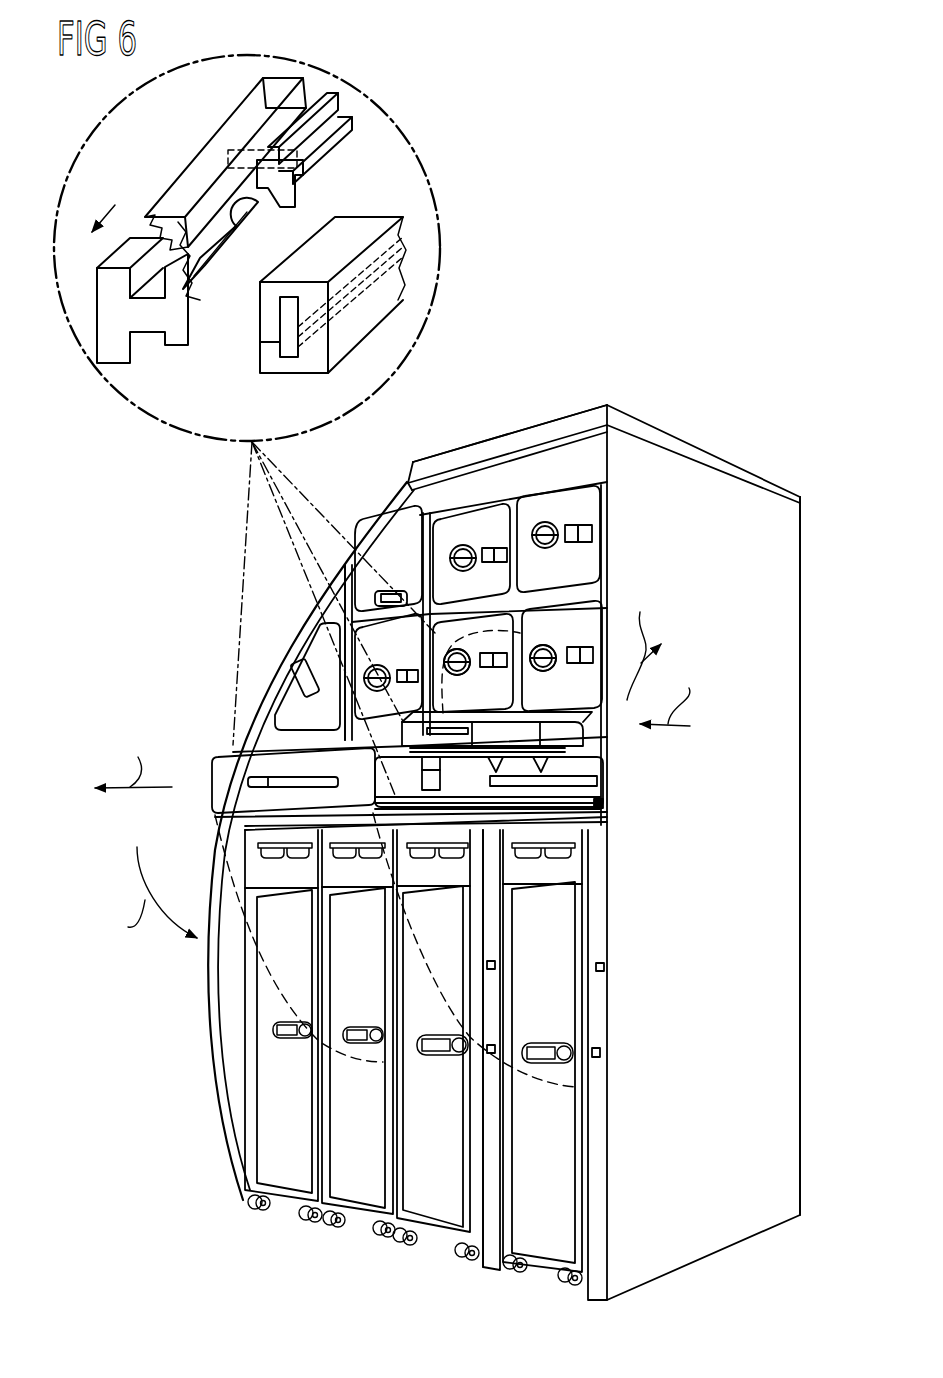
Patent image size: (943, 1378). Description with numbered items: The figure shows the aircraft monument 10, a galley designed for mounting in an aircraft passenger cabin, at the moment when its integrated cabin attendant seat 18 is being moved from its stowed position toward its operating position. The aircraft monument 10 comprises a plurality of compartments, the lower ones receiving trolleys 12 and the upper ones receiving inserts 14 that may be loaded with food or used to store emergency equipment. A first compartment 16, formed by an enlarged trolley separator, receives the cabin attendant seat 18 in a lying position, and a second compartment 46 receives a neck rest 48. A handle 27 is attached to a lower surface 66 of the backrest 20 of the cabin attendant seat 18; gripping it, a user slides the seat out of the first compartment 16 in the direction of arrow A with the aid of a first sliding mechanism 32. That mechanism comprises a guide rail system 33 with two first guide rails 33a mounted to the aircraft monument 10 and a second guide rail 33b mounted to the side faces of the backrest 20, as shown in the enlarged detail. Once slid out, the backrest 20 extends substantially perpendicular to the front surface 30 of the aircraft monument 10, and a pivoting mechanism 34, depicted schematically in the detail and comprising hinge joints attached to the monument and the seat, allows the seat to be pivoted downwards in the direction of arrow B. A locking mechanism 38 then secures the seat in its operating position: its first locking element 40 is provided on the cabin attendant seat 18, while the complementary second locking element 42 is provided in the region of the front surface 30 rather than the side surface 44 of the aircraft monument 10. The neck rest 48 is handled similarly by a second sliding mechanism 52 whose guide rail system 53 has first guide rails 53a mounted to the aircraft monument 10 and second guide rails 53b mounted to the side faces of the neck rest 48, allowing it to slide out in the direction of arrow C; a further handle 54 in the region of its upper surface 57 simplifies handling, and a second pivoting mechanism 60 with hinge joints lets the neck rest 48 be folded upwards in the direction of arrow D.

The aircraft monument 10 is at (480, 843).
The trolleys 12 is at (287, 1180).
The inserts 14 is at (366, 645).
The first compartment 16 is at (600, 781).
The cabin attendant seat 18 is at (489, 820).
The backrest 20 is at (600, 808).
The handle 27 is at (298, 781).
The front surface 30 is at (595, 457).
The first sliding mechanism 32 is at (358, 123).
The guide rail system 33 is at (313, 300).
The first guide rails 33a is at (275, 306).
The second guide rail 33b is at (208, 189).
The pivoting mechanism 34 is at (285, 114).
The locking mechanism 38 is at (602, 1050).
The first locking element 40 is at (422, 770).
The second locking element 42 is at (603, 1052).
The side surface 44 is at (795, 960).
The second compartment 46 is at (585, 734).
The neck rest 48 is at (547, 717).
The second sliding mechanism 52 is at (350, 140).
The guide rail system 53 is at (420, 264).
The first guide rails 53a is at (267, 363).
The second guide rails 53b is at (185, 183).
The further handle 54 is at (510, 698).
The upper surface 57 is at (350, 690).
The second pivoting mechanism 60 is at (262, 135).
The lower surface 66 is at (266, 757).